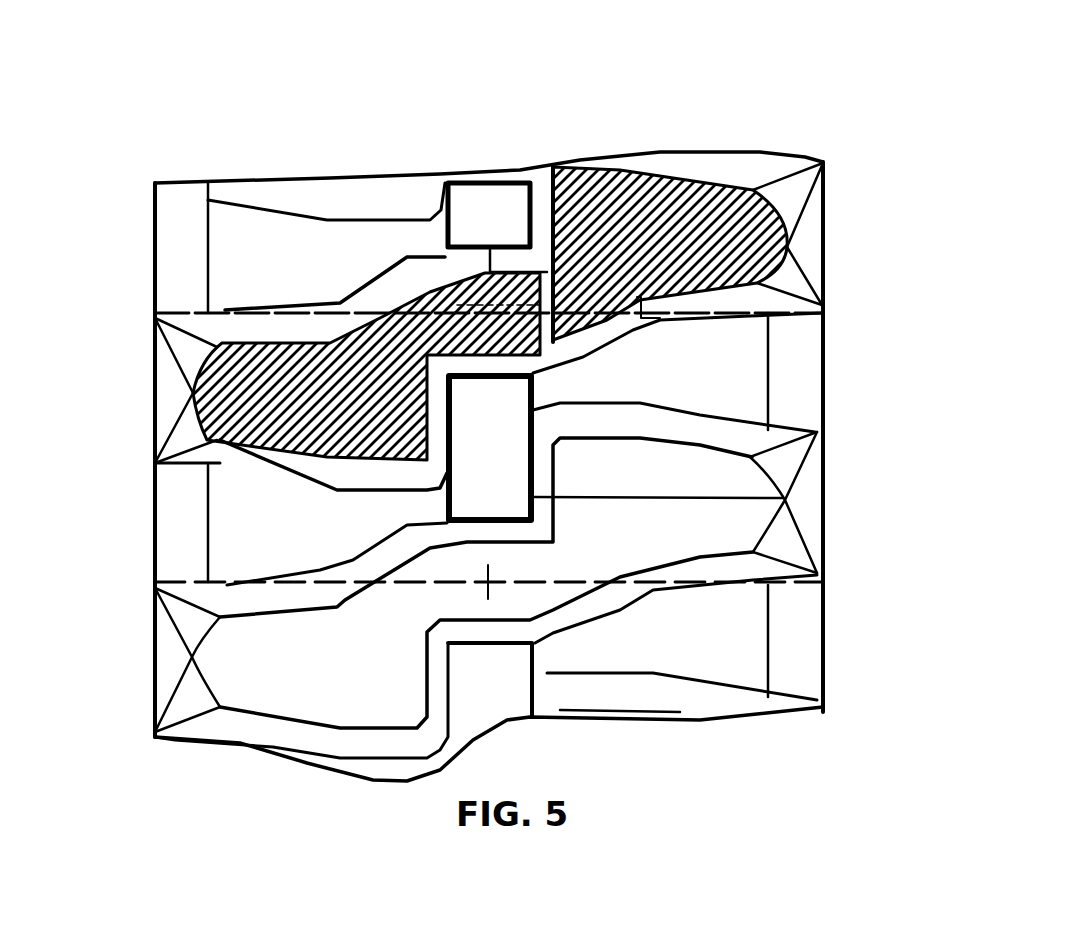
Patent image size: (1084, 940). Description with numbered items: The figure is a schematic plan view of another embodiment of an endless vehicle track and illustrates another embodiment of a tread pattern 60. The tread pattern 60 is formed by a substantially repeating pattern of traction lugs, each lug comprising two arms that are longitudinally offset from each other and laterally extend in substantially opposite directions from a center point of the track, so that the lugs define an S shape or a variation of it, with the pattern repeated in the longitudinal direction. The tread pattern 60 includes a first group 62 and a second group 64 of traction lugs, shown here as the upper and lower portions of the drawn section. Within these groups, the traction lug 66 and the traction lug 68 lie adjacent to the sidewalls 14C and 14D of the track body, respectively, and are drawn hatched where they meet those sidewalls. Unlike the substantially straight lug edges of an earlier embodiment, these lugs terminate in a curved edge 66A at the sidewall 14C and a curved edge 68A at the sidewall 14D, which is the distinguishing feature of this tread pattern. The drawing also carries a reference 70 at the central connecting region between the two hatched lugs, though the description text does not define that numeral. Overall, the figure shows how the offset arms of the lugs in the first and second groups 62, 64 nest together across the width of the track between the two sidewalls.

The tread pattern 60 is at (659, 111).
The first group of traction lugs 62 is at (893, 157).
The second group of traction lugs 64 is at (843, 423).
The traction lug 66 is at (346, 420).
The curved edge 66A is at (190, 397).
The traction lug 68 is at (671, 230).
The curved edge 68A is at (787, 225).
The connecting passage 70 is at (534, 302).
The sidewall 14C is at (150, 513).
The sidewall 14D is at (825, 250).